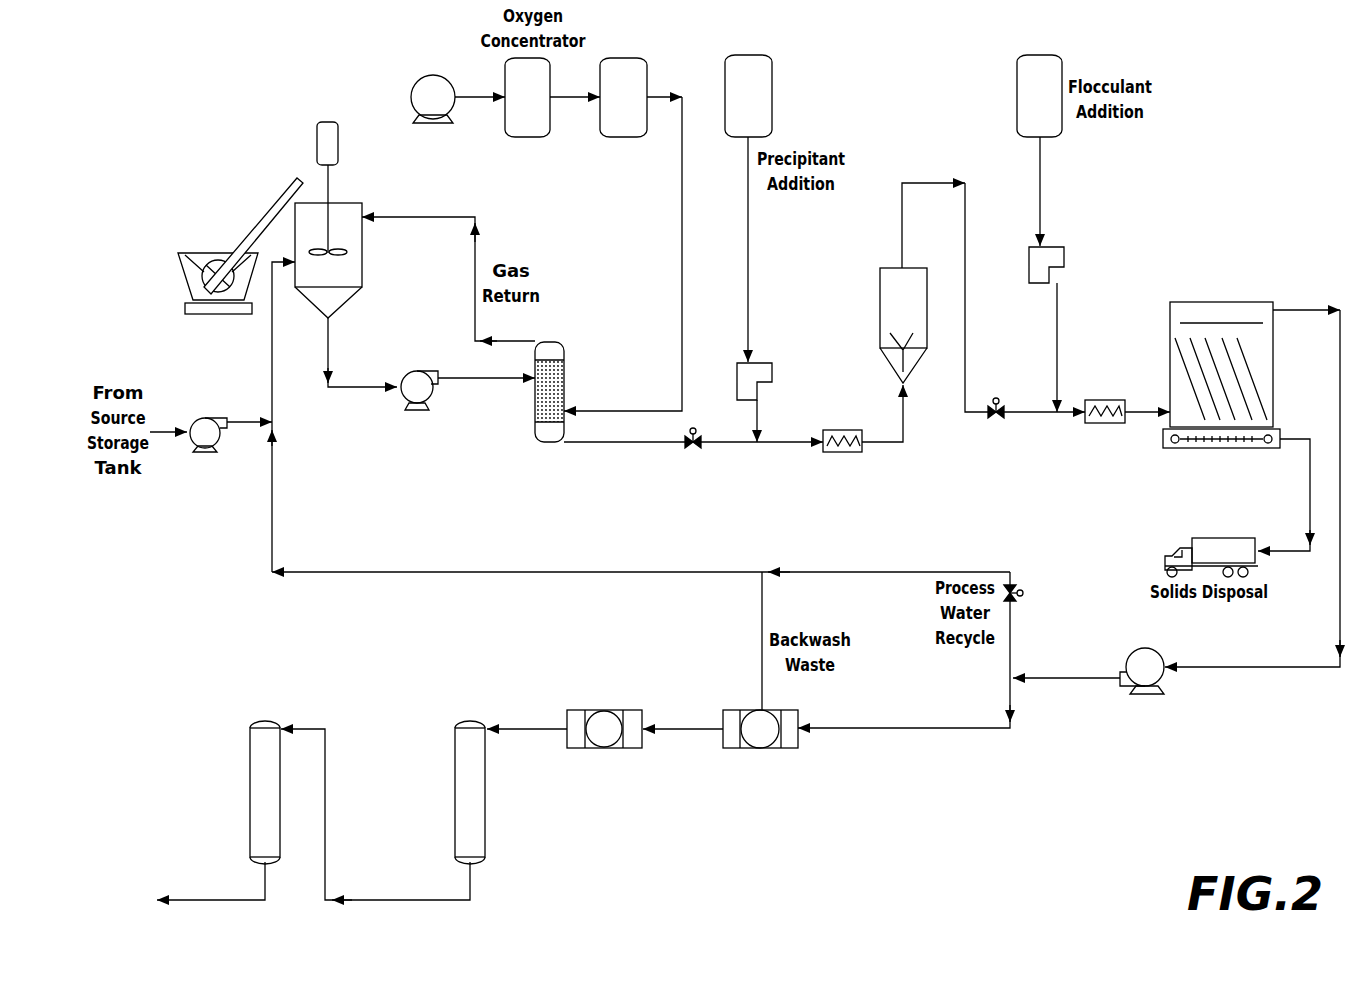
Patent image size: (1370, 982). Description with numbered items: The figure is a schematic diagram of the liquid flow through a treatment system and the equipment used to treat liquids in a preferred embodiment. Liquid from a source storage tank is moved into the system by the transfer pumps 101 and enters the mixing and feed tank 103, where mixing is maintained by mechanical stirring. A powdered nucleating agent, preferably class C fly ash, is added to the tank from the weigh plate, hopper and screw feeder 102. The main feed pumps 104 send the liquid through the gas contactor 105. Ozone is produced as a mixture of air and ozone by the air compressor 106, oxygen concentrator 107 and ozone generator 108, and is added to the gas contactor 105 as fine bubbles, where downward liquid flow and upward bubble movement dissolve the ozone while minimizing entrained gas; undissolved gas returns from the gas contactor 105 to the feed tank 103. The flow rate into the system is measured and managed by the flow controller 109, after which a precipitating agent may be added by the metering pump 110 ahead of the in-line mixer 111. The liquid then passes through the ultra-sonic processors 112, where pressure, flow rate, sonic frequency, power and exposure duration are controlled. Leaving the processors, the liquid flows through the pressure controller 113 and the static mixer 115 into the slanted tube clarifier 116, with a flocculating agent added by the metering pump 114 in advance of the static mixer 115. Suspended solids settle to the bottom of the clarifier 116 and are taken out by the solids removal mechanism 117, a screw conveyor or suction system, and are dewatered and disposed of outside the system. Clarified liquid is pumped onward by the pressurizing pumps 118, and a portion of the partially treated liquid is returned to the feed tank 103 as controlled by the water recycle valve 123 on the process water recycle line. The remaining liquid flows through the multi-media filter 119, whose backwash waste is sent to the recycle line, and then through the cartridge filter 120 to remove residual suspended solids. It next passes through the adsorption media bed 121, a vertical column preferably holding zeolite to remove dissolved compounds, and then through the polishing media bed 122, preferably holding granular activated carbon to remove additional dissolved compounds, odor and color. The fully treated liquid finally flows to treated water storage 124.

The transfer pump 101 is at (205, 418).
The weigh plate, hopper and screw feeder 102 is at (200, 253).
The mixing and feed tank 103 is at (345, 203).
The main feed pump 104 is at (417, 371).
The gas contactor 105 is at (562, 343).
The air compressor 106 is at (420, 80).
The oxygen concentrator 107 is at (506, 73).
The ozone generator 108 is at (601, 73).
The flow controller 109 is at (700, 436).
The metering pump 110 is at (740, 374).
The in-line mixer 111 is at (838, 430).
The ultra-sonic processor 112 is at (888, 268).
The pressure controller 113 is at (1003, 406).
The metering pump 114 is at (1032, 258).
The static mixer 115 is at (1103, 400).
The clarifier 116 is at (1170, 330).
The solids removal mechanism 117 is at (1178, 450).
The pressurizing pump 118 is at (1134, 657).
The multi-media filter 119 is at (733, 710).
The cartridge filter 120 is at (577, 710).
The adsorption media bed 121 is at (455, 742).
The polishing media bed 122 is at (250, 742).
The water recycle valve 123 is at (960, 572).
The storage 124 is at (164, 858).